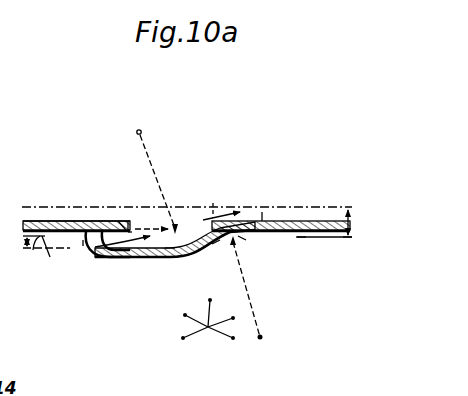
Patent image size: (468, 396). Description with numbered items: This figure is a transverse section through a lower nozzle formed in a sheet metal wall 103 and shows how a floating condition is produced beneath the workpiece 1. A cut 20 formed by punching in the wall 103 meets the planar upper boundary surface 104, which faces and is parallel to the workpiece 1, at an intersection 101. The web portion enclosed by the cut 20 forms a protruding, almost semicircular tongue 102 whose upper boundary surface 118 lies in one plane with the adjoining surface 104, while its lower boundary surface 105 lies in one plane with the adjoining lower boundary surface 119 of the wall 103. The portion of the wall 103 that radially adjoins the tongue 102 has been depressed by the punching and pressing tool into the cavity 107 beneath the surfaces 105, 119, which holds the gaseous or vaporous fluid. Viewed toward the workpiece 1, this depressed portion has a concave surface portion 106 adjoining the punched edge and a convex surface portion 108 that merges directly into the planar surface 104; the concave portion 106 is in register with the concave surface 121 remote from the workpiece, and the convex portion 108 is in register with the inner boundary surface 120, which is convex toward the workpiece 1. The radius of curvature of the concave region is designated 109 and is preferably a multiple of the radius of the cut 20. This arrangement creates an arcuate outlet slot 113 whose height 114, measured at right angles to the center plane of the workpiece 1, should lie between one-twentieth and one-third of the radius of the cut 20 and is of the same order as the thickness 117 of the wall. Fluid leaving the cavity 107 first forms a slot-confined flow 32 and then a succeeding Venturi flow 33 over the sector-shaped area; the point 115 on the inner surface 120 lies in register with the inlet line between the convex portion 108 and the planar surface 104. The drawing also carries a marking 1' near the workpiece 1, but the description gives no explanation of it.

The workpiece 1 is at (281, 201).
The second sheet portion 1' is at (197, 284).
The cut formed by punching 20 is at (130, 229).
The slot-confined flow 32 is at (83, 243).
The Venturi flow 33 is at (212, 184).
The intersection 101 is at (128, 221).
The tongue 102 is at (123, 221).
The sheet metal wall 103 is at (130, 262).
The upper boundary surface 104 is at (37, 221).
The lower boundary surface of the tongue 105 is at (103, 262).
The concave surface portion 106 is at (140, 262).
The cavity 107 is at (208, 328).
The convex surface portion 108 is at (216, 247).
The radius of curvature 109 is at (142, 132).
The outlet slot 113 is at (100, 240).
The height of the slot 114 is at (262, 212).
The point on inner boundary surface 115 is at (253, 232).
The wall thickness 117 is at (345, 241).
The upper boundary surface of the tongue 118 is at (103, 221).
The lower boundary surface of the wall 119 is at (301, 240).
The inner boundary surface 120 is at (244, 252).
The concave surface remote from workpiece 121 is at (172, 255).